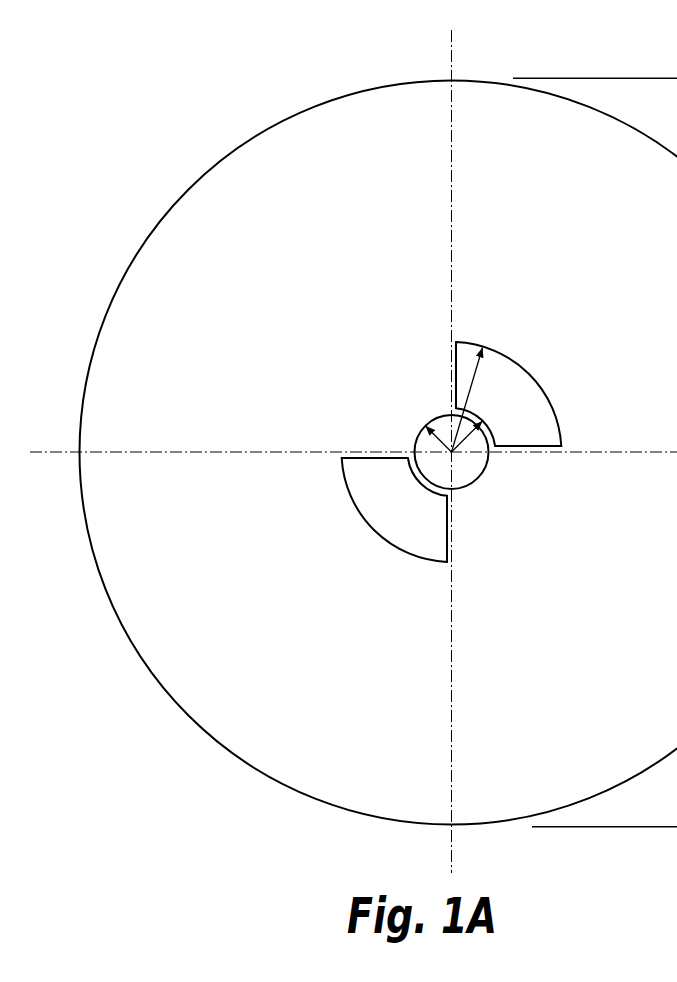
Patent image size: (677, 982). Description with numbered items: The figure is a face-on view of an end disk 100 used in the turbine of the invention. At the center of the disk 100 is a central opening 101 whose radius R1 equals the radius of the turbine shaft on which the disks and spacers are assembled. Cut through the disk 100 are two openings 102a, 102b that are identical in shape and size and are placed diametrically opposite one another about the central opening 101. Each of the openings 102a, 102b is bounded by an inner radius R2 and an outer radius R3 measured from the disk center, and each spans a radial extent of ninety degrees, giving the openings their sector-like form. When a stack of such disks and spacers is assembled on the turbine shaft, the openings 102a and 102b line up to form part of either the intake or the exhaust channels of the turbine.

The disk 100 is at (482, 81).
The central opening 101 is at (486, 474).
The opening 102a is at (466, 364).
The opening 102b is at (371, 493).
The radius of central opening R1 is at (425, 426).
The inner radius R2 is at (482, 421).
The outer radius R3 is at (482, 348).